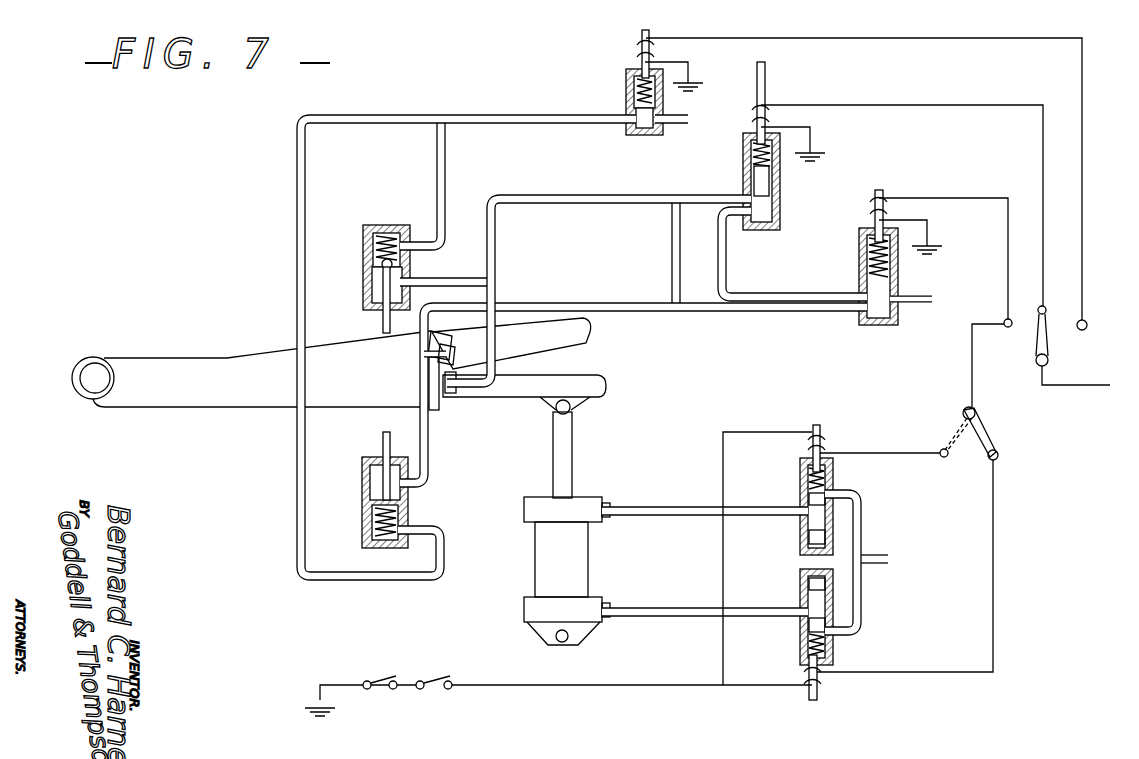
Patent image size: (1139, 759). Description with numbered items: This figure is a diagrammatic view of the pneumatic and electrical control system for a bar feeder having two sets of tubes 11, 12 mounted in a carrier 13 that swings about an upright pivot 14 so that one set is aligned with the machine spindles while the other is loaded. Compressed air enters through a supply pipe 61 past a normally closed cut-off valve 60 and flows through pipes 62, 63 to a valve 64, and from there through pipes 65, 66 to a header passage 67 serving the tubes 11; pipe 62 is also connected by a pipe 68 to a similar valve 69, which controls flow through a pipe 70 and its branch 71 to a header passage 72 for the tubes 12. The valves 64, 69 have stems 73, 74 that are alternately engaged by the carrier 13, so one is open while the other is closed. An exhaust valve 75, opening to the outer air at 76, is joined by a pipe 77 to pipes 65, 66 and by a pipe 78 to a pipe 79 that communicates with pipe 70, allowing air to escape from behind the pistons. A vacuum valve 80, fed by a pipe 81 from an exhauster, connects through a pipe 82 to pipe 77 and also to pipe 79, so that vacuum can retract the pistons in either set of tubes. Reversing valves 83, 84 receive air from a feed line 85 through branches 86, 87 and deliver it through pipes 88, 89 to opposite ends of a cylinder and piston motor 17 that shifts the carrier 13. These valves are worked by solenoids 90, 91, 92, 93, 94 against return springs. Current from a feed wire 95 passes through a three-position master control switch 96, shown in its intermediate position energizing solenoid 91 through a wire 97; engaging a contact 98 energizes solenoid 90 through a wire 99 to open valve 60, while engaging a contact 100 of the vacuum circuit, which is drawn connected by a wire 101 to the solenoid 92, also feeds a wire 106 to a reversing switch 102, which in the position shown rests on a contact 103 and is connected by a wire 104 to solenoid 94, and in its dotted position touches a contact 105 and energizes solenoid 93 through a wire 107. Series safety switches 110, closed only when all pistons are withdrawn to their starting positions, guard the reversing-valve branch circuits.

The set of tubes 11 is at (586, 380).
The set of tubes 12 is at (535, 344).
The carrier 13 is at (241, 398).
The upright pivot 14 is at (104, 368).
The cylinder and piston motor 17 is at (580, 558).
The cut-off valve 60 is at (626, 95).
The supply pipe 61 is at (681, 124).
The pipe 62 is at (499, 116).
The pipe 63 is at (446, 178).
The valve 64 is at (363, 262).
The pipe 65 is at (440, 285).
The pipe 66 is at (492, 293).
The header passage 67 is at (446, 397).
The pipe 68 is at (298, 316).
The valve 69 is at (362, 495).
The pipe 70 is at (425, 445).
The branch 71 is at (453, 353).
The header passage 72 is at (441, 345).
The stem 73 is at (382, 327).
The stem 74 is at (383, 438).
The exhaust valve 75 is at (743, 177).
The exhaust opening 76 is at (780, 205).
The pipe 77 is at (600, 196).
The pipe 78 is at (727, 265).
The pipe 79 is at (612, 307).
The vacuum valve 80 is at (859, 262).
The pipe 81 is at (906, 299).
The pipe 82 is at (776, 297).
The reversing valve 83 is at (800, 483).
The reversing valve 84 is at (800, 626).
The pipe 85 is at (880, 560).
The branch 86 is at (862, 520).
The branch 87 is at (862, 600).
The pipe 88 is at (686, 512).
The pipe 89 is at (665, 611).
The solenoid 90 is at (641, 47).
The solenoid 91 is at (760, 112).
The solenoid 92 is at (876, 200).
The solenoid 93 is at (822, 446).
The solenoid 94 is at (821, 686).
The feed wire 95 is at (1077, 386).
The master control switch 96 is at (1048, 348).
The wire 97 is at (1044, 222).
The contact 98 is at (1087, 325).
The wire 99 is at (1083, 112).
The contact 100 is at (1003, 328).
The wire 101 is at (1006, 273).
The reversing switch 102 is at (980, 435).
The contact 103 is at (998, 456).
The wire 104 is at (995, 600).
The contact 105 is at (942, 458).
The wire 106 is at (972, 379).
The wire 107 is at (870, 453).
The switch 110 is at (436, 680).